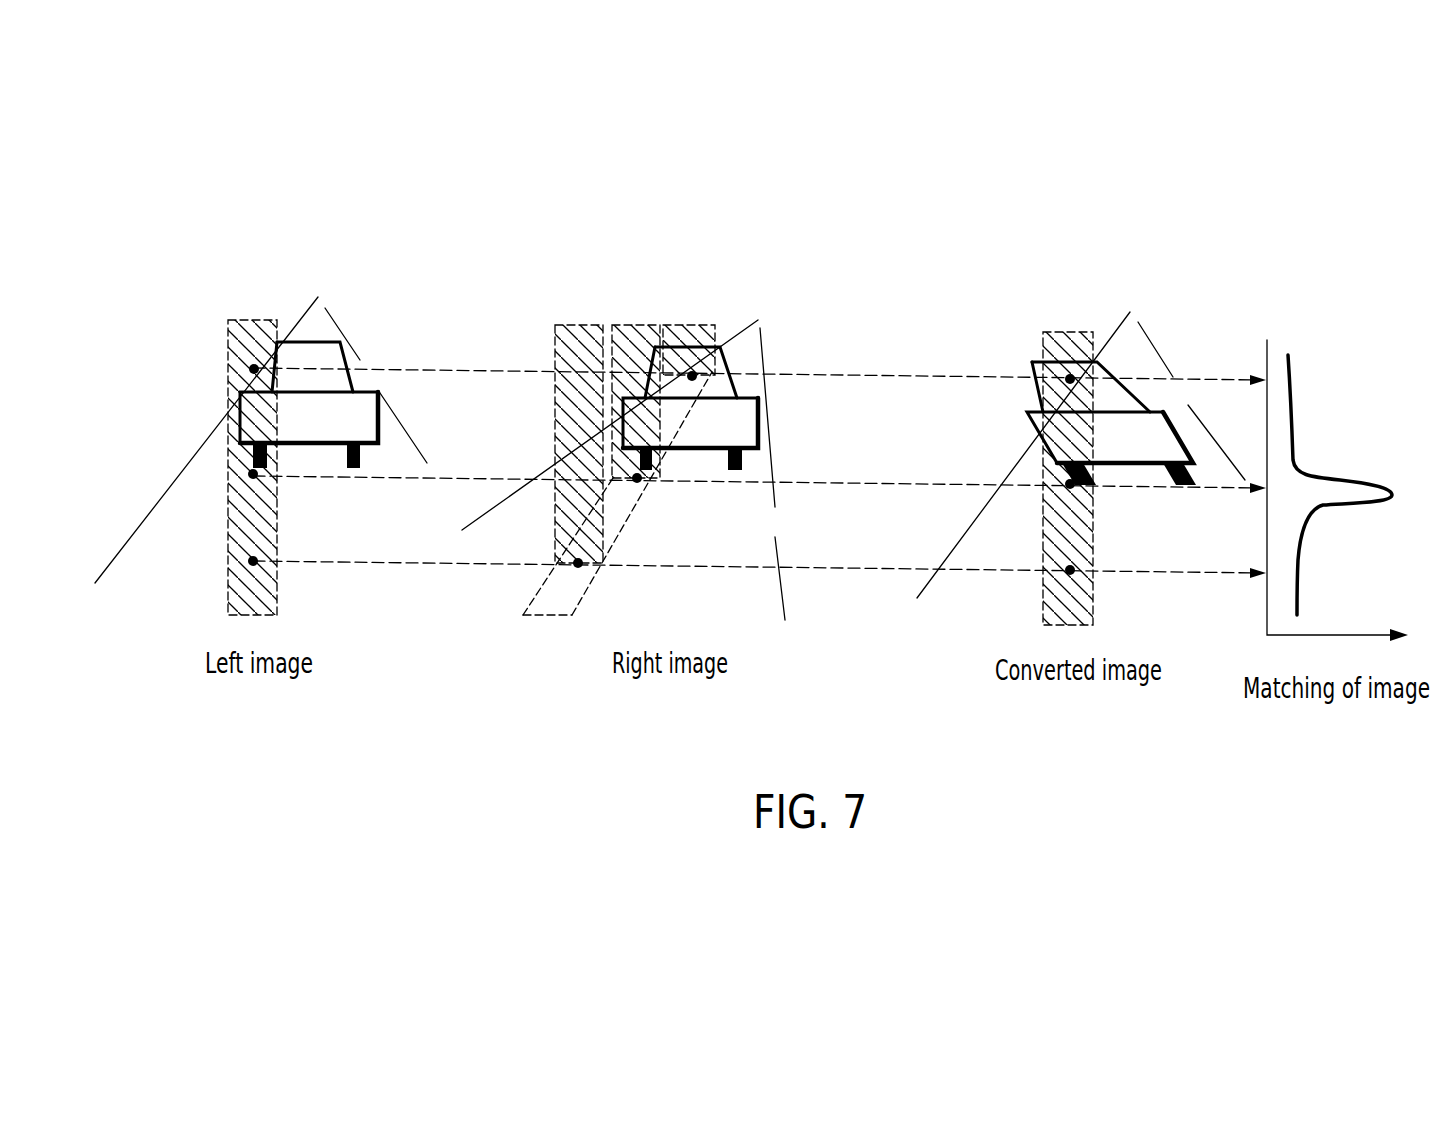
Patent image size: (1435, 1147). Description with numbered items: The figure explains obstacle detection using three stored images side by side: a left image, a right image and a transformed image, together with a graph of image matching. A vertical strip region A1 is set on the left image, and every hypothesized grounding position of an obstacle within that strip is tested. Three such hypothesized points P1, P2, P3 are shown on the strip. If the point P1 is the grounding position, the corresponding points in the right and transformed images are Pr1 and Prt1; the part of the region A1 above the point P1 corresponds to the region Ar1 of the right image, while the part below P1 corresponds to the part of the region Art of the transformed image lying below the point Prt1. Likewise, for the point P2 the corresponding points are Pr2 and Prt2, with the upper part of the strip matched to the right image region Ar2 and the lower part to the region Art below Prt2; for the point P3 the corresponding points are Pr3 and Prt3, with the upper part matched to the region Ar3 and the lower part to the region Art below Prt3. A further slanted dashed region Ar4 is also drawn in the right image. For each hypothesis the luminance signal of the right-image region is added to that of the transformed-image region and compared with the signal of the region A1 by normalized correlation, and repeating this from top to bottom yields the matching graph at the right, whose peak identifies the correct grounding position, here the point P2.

The vertical strip region A1 is at (247, 326).
The point P1 is at (253, 369).
The point P2 is at (252, 473).
The point P3 is at (252, 560).
The region Ar1 is at (676, 326).
The right image region Ar2 is at (625, 326).
The region Ar3 is at (568, 326).
The fourth (oblique) search area in right image Ar4 is at (627, 513).
The point Pr1 is at (692, 375).
The point Pr2 is at (637, 478).
The point Pr3 is at (578, 563).
The region Art is at (1060, 332).
The point Prt1 is at (1069, 379).
The point Prt2 is at (1069, 484).
The point Prt3 is at (1069, 571).